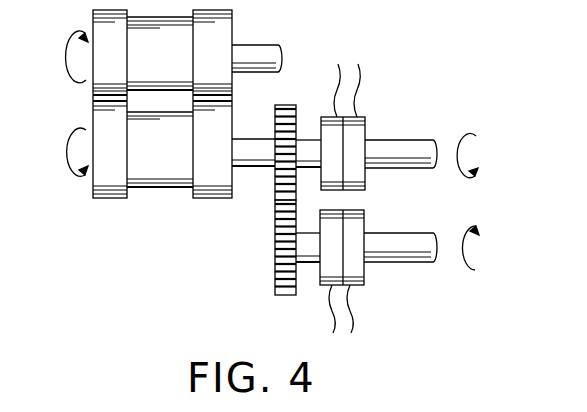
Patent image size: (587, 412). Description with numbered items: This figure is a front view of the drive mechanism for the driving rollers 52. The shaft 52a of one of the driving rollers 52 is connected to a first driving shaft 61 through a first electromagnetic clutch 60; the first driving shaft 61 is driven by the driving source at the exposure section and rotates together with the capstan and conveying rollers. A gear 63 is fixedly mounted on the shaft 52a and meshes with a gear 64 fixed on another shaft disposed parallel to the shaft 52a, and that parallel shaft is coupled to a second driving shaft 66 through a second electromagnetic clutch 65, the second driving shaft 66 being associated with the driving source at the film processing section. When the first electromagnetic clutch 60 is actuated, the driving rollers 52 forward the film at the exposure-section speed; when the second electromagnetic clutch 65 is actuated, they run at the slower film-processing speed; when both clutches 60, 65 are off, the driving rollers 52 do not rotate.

The driving rollers 52 is at (113, 196).
The shaft 52a is at (252, 167).
The first electromagnetic clutch 60 is at (362, 121).
The first driving shaft 61 is at (406, 143).
The gear 63 is at (282, 104).
The gear 64 is at (284, 297).
The second electromagnetic clutch 65 is at (365, 283).
The second driving shaft 66 is at (420, 263).